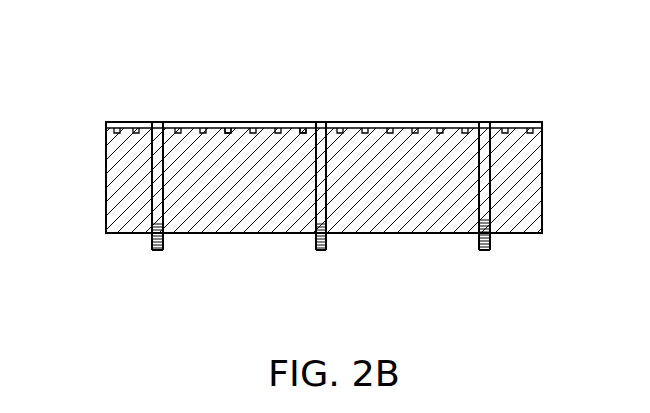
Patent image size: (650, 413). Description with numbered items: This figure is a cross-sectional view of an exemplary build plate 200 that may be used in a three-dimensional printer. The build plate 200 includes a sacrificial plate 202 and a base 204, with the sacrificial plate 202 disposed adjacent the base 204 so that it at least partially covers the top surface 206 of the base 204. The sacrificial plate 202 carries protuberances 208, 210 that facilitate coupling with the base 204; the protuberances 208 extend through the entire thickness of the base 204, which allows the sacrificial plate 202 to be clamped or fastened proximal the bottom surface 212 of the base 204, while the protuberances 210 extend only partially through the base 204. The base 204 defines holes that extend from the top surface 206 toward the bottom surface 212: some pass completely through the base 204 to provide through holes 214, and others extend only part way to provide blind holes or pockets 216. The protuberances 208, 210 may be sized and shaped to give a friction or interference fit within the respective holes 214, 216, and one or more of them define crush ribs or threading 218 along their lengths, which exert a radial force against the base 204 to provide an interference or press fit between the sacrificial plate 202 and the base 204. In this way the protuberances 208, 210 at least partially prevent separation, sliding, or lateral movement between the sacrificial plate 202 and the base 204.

The build plate 200 is at (100, 90).
The sacrificial plate 202 is at (518, 110).
The base 204 is at (558, 216).
The top surface 206 is at (445, 121).
The protuberance 208 is at (314, 224).
The protuberance 210 is at (207, 136).
The bottom surface 212 is at (411, 235).
The through holes 214 is at (372, 129).
The blind holes or pockets 216 is at (247, 147).
The threading 218 is at (178, 249).